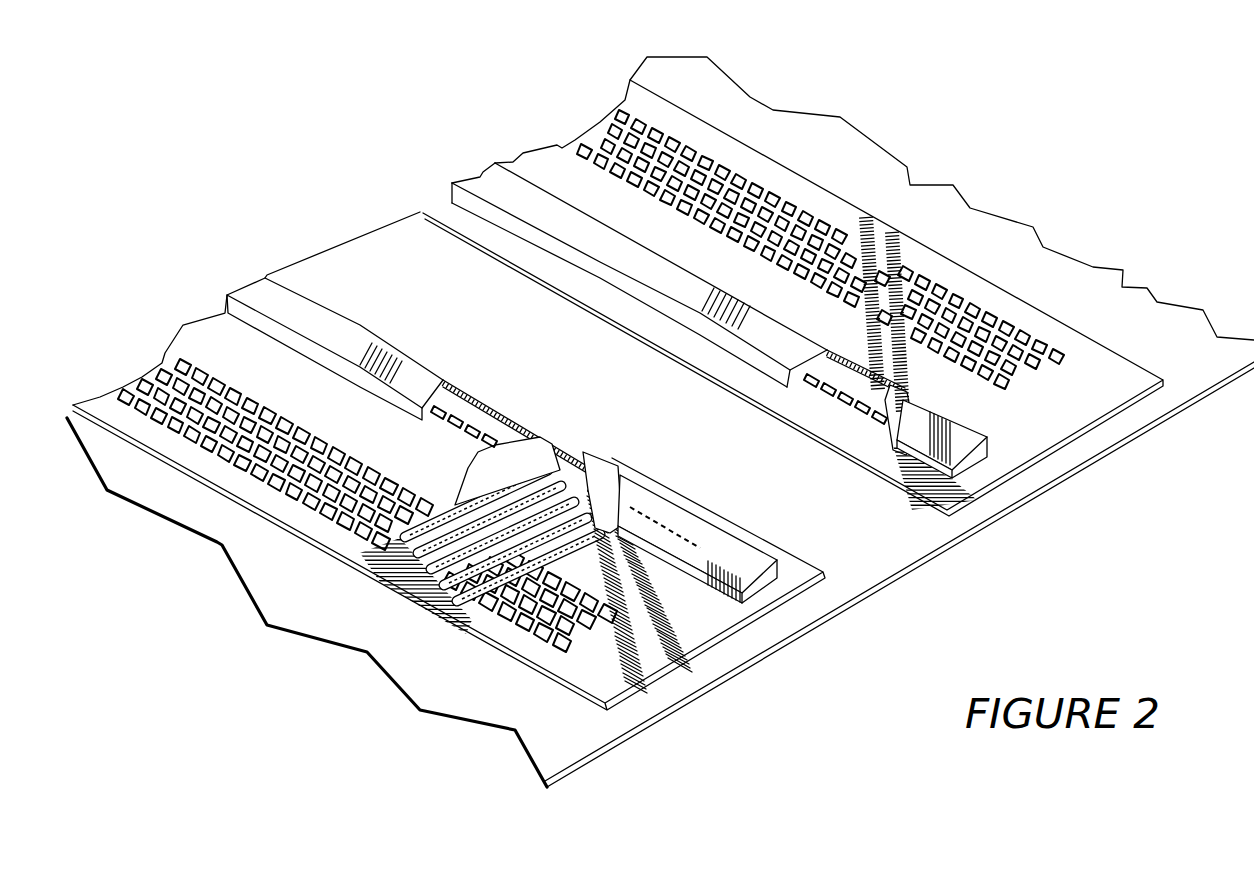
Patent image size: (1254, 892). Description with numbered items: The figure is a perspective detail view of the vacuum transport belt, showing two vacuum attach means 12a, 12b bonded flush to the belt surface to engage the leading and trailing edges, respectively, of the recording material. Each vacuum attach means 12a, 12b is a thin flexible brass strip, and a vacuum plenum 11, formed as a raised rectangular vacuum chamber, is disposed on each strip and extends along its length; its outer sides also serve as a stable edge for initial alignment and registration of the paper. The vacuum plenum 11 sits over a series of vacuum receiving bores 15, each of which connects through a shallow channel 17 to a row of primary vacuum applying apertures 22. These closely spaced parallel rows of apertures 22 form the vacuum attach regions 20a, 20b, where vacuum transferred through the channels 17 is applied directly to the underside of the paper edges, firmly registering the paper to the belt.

The vacuum plenum 11 is at (757, 582).
The vacuum attach means 12a is at (673, 668).
The vacuum attach means 12b is at (1013, 467).
The vacuum receiving bore 15 is at (593, 490).
The channel 17 is at (552, 488).
The vacuum attach region 20a is at (423, 657).
The vacuum attach region 20b is at (910, 195).
The primary vacuum applying aperture 22 is at (543, 633).